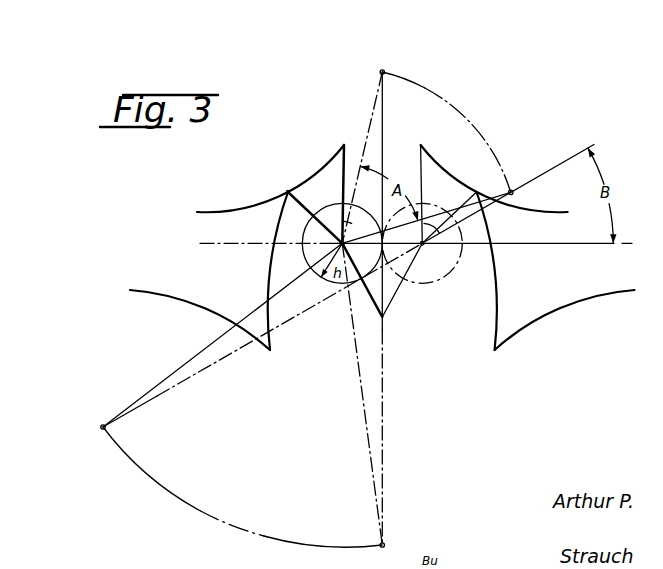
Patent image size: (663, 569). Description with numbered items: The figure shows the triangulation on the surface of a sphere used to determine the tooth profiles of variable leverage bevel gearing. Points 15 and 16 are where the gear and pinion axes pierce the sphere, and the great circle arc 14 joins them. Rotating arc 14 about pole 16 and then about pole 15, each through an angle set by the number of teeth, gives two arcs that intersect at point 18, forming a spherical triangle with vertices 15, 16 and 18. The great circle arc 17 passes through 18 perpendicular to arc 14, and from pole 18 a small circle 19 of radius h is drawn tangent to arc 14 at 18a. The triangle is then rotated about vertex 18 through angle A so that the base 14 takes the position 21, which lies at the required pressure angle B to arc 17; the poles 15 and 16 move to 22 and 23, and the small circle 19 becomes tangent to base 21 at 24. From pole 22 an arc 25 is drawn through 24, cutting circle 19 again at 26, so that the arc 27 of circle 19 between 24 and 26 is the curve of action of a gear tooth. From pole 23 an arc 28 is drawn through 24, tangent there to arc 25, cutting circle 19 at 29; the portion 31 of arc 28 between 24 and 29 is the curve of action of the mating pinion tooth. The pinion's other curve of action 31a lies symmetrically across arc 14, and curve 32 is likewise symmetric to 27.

The great circle arc 14 is at (385, 406).
The gear axis point 15 is at (384, 544).
The pinion axis point 16 is at (381, 70).
The great circle arc 17 is at (542, 245).
The intersection point 18 is at (341, 232).
The tangent point 18a is at (420, 243).
The small circle 19 is at (328, 282).
The rotated base 21 is at (213, 366).
The rotated gear pole 22 is at (101, 426).
The rotated pinion pole 23 is at (512, 191).
The tangent point 24 is at (368, 290).
The small circle arc 25 is at (314, 187).
The intersection point 26 is at (316, 216).
The curve of action of gear tooth 27 is at (340, 244).
The small circle arc 28 is at (343, 146).
The intersection point 29 is at (345, 205).
The curve of action of pinion tooth 31 is at (349, 223).
The other curve of action of pinion tooth 31a is at (431, 241).
The curve of action of gear tooth 32 is at (421, 248).